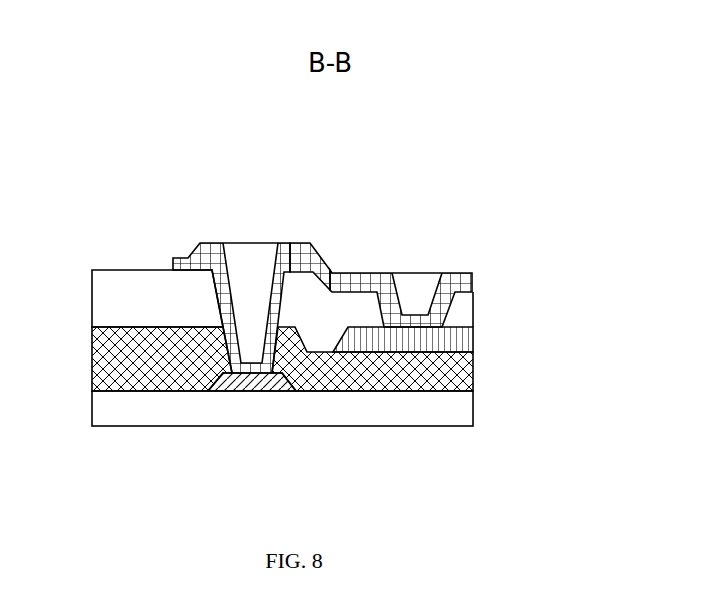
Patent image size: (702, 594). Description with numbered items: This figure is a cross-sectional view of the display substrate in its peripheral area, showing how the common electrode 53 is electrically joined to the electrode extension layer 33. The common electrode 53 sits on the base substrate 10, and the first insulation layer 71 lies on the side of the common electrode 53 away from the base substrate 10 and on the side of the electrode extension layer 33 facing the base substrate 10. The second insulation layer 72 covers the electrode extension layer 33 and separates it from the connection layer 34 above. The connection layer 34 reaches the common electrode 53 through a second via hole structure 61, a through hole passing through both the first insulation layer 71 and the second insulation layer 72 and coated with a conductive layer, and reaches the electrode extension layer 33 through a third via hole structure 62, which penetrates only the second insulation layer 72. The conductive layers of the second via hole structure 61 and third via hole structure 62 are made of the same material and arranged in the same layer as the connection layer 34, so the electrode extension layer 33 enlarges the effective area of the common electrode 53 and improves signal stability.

The base substrate 10 is at (150, 410).
The first insulation layer 71 is at (365, 368).
The second insulation layer 72 is at (138, 307).
The common electrode 53 is at (256, 380).
The electrode extension layer 33 is at (462, 340).
The second via hole structure 61 is at (233, 298).
The connection layer 34 is at (316, 262).
The third via hole structure 62 is at (394, 292).